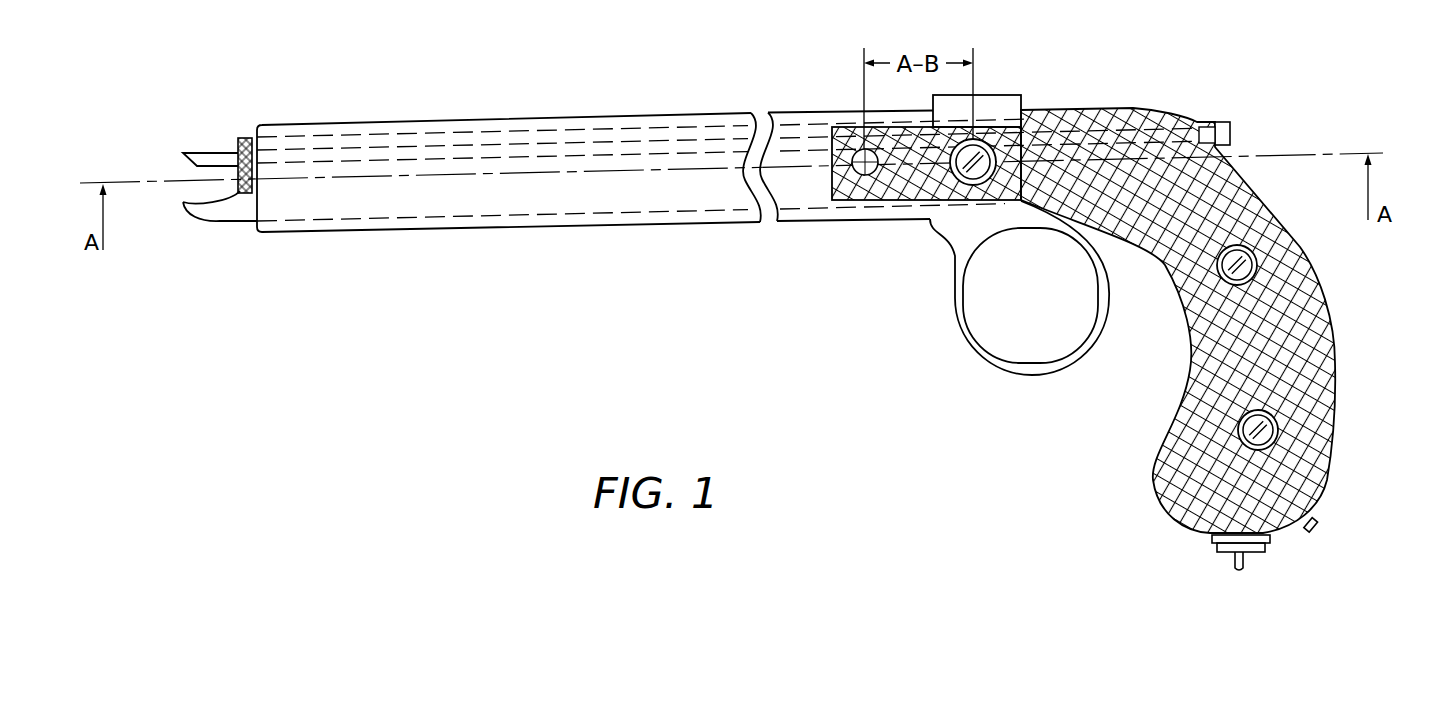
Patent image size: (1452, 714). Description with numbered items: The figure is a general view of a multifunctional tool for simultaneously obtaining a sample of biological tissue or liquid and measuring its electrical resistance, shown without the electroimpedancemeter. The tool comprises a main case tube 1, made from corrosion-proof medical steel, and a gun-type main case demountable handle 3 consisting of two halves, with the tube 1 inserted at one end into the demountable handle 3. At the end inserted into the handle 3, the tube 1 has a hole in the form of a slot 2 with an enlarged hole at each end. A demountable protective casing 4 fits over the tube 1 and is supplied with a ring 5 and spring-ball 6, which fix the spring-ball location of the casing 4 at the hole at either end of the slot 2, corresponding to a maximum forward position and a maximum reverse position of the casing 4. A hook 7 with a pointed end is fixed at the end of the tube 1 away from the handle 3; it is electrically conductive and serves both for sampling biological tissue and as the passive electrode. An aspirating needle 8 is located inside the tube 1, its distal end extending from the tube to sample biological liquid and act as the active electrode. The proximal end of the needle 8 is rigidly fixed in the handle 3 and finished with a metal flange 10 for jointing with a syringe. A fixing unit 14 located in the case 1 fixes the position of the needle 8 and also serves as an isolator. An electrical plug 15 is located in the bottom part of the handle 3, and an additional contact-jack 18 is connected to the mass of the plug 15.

The main case tube 1 is at (512, 130).
The slot 2 is at (902, 128).
The main case demountable handle 3 is at (1337, 370).
The protective casing 4 is at (817, 218).
The ring 5 is at (950, 243).
The spring-ball 6 is at (973, 147).
The hook 7 is at (213, 222).
The aspirating needle 8 is at (217, 152).
The metal flange 10 is at (1227, 122).
The fixing unit 14 is at (243, 138).
The electrical plug 15 is at (1217, 545).
The additional contact-jack 18 is at (1315, 525).